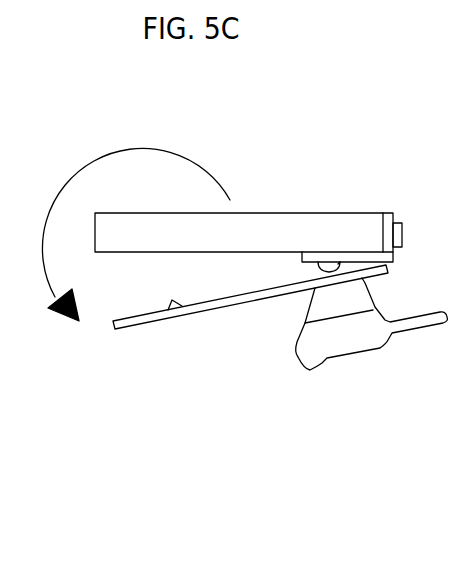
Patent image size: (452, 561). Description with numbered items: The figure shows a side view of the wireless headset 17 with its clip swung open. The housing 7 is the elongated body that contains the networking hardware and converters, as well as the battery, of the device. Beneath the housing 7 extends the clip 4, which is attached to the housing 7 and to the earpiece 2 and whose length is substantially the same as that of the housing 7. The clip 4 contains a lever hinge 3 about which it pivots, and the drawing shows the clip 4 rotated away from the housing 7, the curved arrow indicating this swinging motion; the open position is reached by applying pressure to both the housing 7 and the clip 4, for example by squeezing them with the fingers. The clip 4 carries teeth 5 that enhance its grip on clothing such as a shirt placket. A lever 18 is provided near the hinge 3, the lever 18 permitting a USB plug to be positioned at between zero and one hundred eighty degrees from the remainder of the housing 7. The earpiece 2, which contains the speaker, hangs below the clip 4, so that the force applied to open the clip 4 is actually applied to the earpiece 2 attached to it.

The housing 7 is at (200, 230).
The lever 18 is at (319, 263).
The lever hinge 3 is at (339, 263).
The clip 4 is at (256, 292).
The teeth 5 is at (170, 313).
The earpiece 2 is at (336, 292).
The wireless headset 17 is at (202, 480).